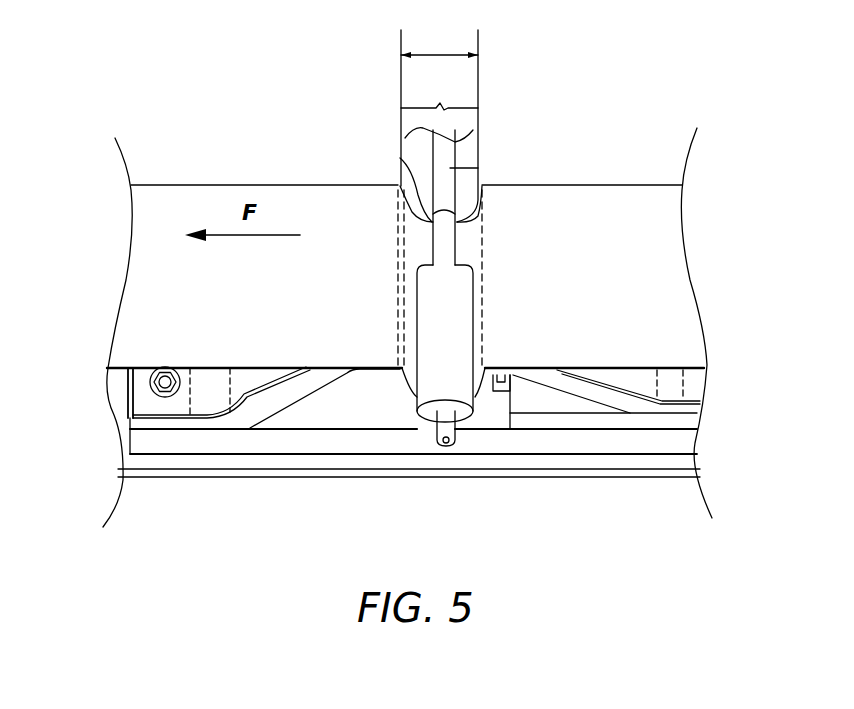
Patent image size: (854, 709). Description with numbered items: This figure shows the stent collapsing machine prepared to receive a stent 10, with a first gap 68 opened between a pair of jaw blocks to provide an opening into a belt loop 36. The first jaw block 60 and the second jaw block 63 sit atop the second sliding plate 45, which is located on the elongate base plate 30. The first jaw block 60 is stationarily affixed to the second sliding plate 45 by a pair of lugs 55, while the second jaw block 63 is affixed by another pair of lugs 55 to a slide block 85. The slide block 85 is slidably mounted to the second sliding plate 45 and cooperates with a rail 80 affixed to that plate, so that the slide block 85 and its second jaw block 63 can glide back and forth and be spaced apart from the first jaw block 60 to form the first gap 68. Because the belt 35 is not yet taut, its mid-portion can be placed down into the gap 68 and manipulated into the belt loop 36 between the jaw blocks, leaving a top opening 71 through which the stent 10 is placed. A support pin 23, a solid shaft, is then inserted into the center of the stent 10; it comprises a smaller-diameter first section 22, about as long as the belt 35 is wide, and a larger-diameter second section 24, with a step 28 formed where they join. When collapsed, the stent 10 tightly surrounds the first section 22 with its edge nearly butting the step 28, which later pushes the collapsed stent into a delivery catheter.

The stent 10 is at (465, 335).
The support pin first section 22 is at (450, 241).
The support pin 23 is at (437, 437).
The support pin second section 24 is at (457, 168).
The step 28 is at (400, 158).
The elongate base plate 30 is at (298, 476).
The belt 35 is at (625, 208).
The belt loop 36 is at (416, 255).
The second sliding plate 45 is at (662, 443).
The lugs 55 is at (156, 396).
The first jaw block 60 is at (288, 395).
The second jaw block 63 is at (640, 380).
The first gap 68 is at (439, 55).
The top opening 71 is at (445, 103).
The rail 80 is at (502, 378).
The slide block 85 is at (533, 407).